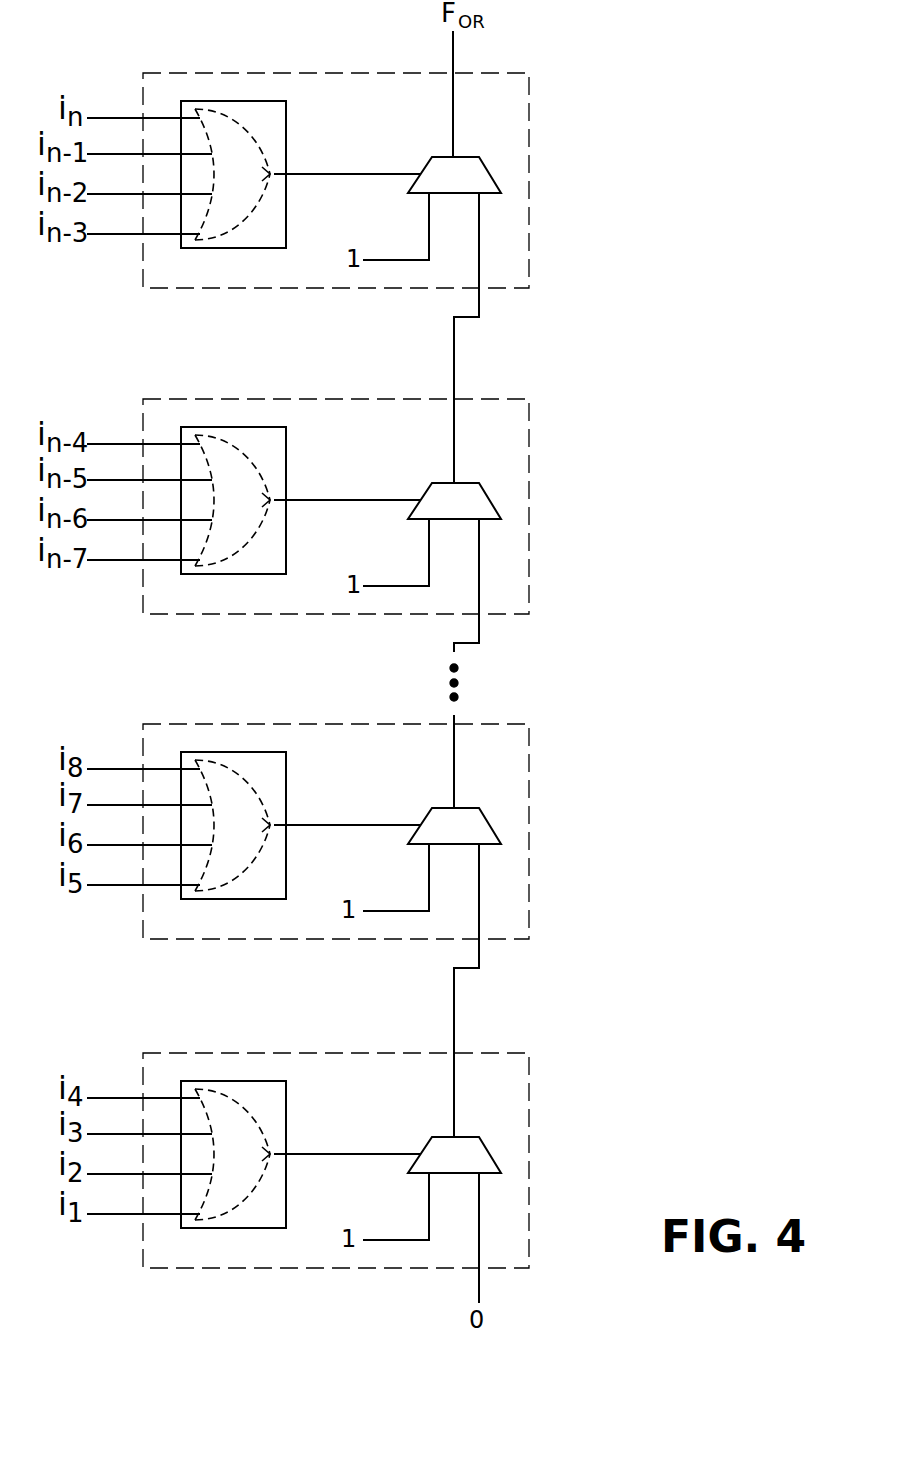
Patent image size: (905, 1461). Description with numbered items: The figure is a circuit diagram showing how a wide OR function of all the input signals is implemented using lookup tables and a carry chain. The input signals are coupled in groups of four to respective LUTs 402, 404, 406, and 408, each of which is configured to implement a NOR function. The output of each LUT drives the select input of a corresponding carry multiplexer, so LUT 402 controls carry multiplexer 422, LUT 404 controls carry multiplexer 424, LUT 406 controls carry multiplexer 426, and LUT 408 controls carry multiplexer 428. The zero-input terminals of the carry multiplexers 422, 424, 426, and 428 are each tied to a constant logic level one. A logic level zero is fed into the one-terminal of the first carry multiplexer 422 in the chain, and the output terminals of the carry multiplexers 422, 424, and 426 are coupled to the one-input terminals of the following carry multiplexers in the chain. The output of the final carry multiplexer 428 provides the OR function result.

The LUT 402 is at (254, 1154).
The LUT 404 is at (254, 825).
The LUT 406 is at (254, 500).
The LUT 408 is at (287, 160).
The carry multiplexer 422 is at (466, 1143).
The carry multiplexer 424 is at (466, 814).
The carry multiplexer 426 is at (466, 489).
The carry multiplexer 428 is at (513, 155).